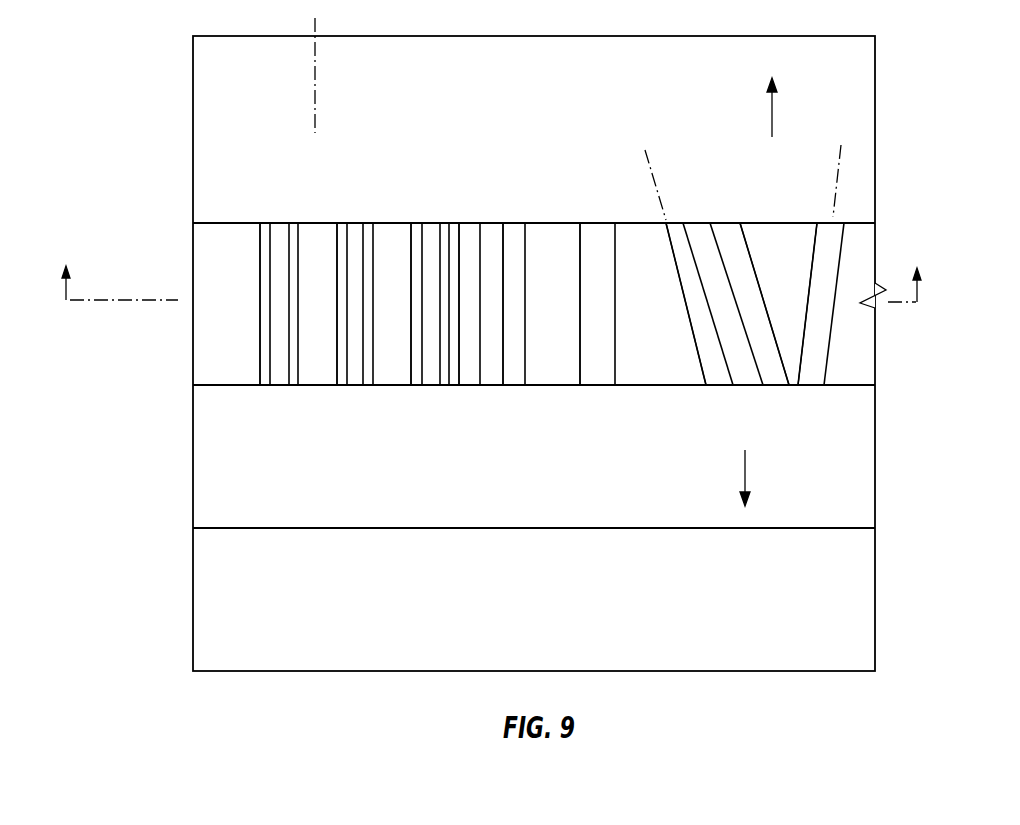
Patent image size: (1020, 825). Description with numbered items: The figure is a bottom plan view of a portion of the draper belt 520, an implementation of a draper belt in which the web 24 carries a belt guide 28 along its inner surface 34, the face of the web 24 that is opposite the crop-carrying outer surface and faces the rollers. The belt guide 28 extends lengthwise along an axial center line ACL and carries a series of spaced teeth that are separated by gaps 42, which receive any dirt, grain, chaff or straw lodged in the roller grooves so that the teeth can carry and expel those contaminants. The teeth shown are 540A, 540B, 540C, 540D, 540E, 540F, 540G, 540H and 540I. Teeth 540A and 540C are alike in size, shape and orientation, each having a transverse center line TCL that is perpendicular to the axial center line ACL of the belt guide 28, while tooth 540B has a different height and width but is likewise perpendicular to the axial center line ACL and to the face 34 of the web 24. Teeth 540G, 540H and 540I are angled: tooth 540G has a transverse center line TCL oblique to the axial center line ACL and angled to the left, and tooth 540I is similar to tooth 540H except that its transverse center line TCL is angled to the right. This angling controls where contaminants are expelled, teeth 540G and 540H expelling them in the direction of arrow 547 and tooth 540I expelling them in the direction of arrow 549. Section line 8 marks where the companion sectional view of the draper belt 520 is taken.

The draper belt 520 is at (150, 92).
The web 24 is at (809, 112).
The belt guide 28 is at (790, 386).
The inner surface 34 is at (678, 481).
The gaps 42 is at (232, 232).
The teeth 540A is at (260, 352).
The teeth 540B is at (337, 363).
The teeth 540C is at (411, 363).
The teeth 540D is at (459, 373).
The teeth 540E is at (503, 373).
The teeth 540F is at (580, 373).
The teeth 540G is at (704, 370).
The teeth 540H is at (750, 236).
The teeth 540I is at (843, 244).
The arrow 547 is at (745, 475).
The arrow 549 is at (772, 110).
The transverse center line TCL is at (315, 88).
The axial center line ACL is at (133, 300).
The section line 8- 8 is at (502, 280).